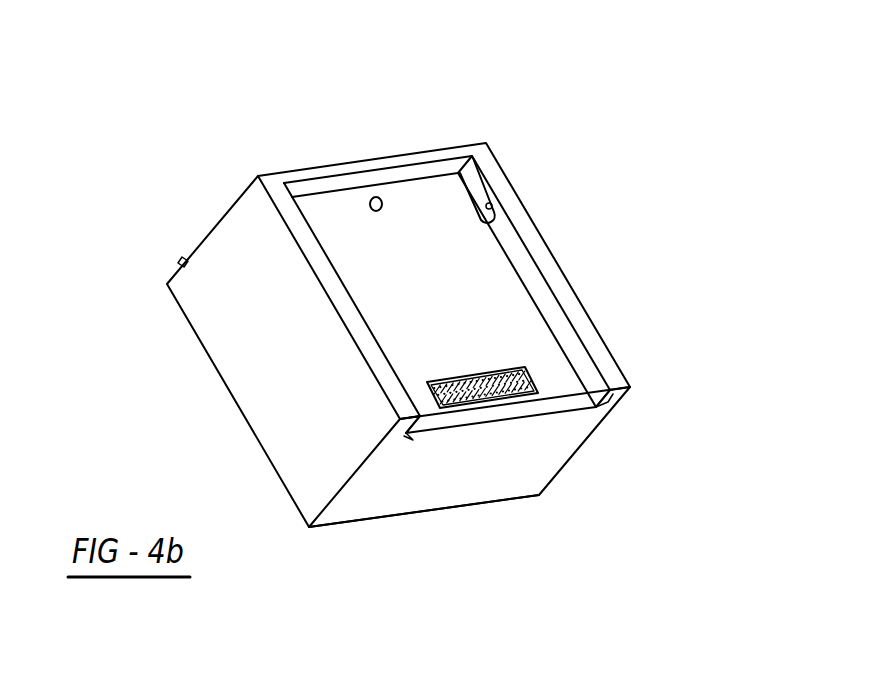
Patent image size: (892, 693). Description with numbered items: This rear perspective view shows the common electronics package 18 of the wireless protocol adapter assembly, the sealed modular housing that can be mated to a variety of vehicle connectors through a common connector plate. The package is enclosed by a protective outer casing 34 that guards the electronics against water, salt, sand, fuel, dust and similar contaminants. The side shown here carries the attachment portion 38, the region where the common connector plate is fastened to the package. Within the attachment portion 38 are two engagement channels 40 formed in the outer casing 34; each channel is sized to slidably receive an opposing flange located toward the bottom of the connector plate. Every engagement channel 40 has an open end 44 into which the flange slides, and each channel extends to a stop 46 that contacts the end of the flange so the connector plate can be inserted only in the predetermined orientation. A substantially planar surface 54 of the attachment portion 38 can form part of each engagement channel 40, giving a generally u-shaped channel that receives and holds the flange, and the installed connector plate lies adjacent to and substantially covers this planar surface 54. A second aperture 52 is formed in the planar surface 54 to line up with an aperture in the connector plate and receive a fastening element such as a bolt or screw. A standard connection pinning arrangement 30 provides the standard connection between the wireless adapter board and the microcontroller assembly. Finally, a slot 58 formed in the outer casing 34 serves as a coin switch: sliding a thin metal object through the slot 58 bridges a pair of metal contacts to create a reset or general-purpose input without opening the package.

The common electronics package 18 is at (224, 150).
The standard connection pinning arrangement 30 is at (483, 402).
The outer casing 34 is at (372, 524).
The attachment portion 38 is at (562, 388).
The engagement channel 40 is at (500, 227).
The open end 44 is at (607, 402).
The stop 46 is at (490, 203).
The second aperture 52 is at (378, 197).
The planar surface 54 is at (493, 305).
The slot 58 is at (182, 257).